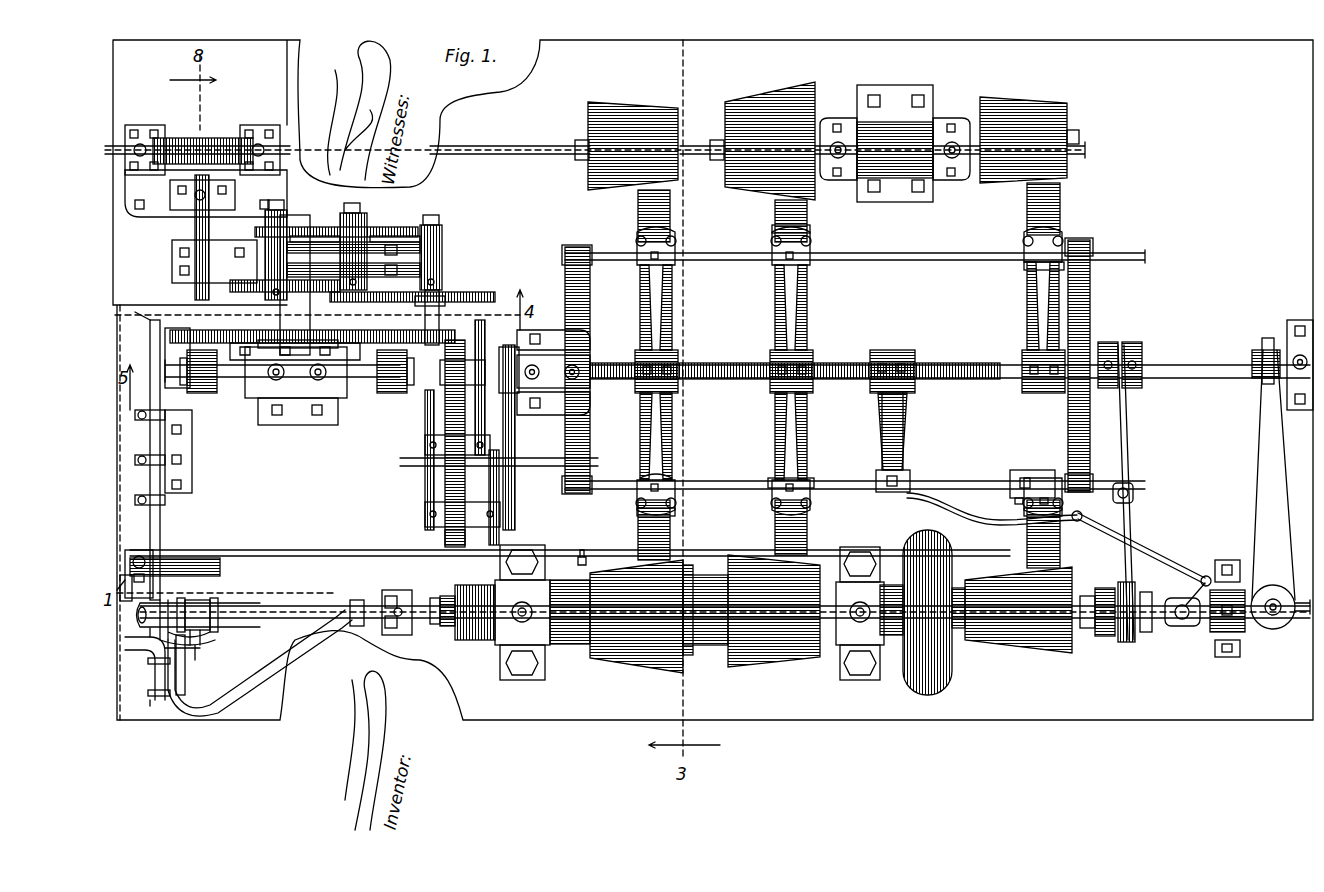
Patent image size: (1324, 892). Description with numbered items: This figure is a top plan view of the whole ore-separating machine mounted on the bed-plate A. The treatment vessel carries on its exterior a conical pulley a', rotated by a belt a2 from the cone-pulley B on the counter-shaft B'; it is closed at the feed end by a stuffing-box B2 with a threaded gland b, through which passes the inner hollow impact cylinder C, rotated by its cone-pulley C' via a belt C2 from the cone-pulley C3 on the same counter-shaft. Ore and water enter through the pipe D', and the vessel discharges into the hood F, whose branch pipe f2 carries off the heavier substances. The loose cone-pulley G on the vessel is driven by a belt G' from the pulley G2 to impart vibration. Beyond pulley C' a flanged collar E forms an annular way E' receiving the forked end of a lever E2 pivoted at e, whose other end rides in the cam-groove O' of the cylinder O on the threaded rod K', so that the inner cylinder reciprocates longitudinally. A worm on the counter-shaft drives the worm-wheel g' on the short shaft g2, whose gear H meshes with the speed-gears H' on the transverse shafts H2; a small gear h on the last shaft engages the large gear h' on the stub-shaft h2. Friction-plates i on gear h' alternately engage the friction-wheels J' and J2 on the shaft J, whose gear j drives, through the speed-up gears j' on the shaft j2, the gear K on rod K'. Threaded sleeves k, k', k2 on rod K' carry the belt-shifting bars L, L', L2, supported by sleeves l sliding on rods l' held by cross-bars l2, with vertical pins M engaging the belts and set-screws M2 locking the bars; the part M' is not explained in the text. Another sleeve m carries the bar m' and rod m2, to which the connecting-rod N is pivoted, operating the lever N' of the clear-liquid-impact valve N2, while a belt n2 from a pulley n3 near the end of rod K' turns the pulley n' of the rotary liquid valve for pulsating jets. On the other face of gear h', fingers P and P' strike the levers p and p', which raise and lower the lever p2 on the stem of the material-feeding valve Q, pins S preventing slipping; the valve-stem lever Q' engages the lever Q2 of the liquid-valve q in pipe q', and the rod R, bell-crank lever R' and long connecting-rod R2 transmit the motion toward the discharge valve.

The bed-plate A is at (713, 380).
The cone-pulley B is at (770, 127).
The counter-shaft B' is at (595, 131).
The stuffing-box B2 is at (475, 642).
The inner impact cylinder C is at (397, 601).
The cone-pulley C' is at (1012, 621).
The belt C2 is at (1062, 218).
The cone-pulley C3 is at (1068, 120).
The feed pipe D' is at (725, 592).
The flanged collar E is at (1097, 635).
The annular way E' is at (1135, 632).
The lever E2 is at (1132, 510).
The hood F is at (915, 548).
The loose cone-pulley G is at (616, 625).
The belt G' is at (722, 251).
The pulley G2 is at (615, 102).
The gear H is at (244, 285).
The speed-gears H' is at (353, 241).
The transverse shafts H2 is at (365, 220).
The shaft J is at (282, 382).
The friction-wheel J' is at (390, 388).
The friction-wheel J2 is at (204, 394).
The gear K is at (499, 430).
The threaded rod K' is at (950, 354).
The belt-shifting bar L is at (1026, 371).
The belt-shifting bar L' is at (776, 371).
The belt-shifting bar L2 is at (640, 305).
The vertical pins M is at (828, 375).
The hub M' is at (827, 356).
The set-screws M2 is at (1028, 265).
The connecting-rod N is at (1141, 548).
The lever N' is at (1216, 600).
The clear-liquid-impact valve N2 is at (1178, 626).
The cam cylinder O is at (1131, 356).
The cam-groove O' is at (1131, 347).
The striking-finger P is at (141, 445).
The striking-finger P' is at (327, 287).
The material-feeding valve Q is at (199, 610).
The lever Q' is at (215, 645).
The lever Q2 is at (185, 668).
The rod R is at (182, 548).
The bell-crank lever R' is at (159, 561).
The connecting-rod R2 is at (318, 550).
The pins S is at (160, 590).
The conical belt surface a' is at (774, 600).
The belt a2 is at (808, 442).
The threaded gland b is at (444, 628).
The pivot e is at (1120, 483).
The branch pipe f2 is at (425, 450).
The worm-wheel g' is at (202, 140).
The short shaft g2 is at (194, 236).
The small gear h is at (437, 317).
The large gear h' is at (312, 332).
The stub-shaft h2 is at (305, 226).
The friction-plates i is at (640, 482).
The gear j is at (485, 386).
The speed-up gears j' is at (415, 460).
The short longitudinal shaft j2 is at (500, 512).
The threaded sleeve k is at (1032, 361).
The threaded sleeve k' is at (805, 357).
The threaded sleeve k2 is at (678, 355).
The sleeves l is at (855, 373).
The rods l' is at (855, 243).
The cross-bars l2 is at (570, 305).
The threaded sleeve m is at (912, 423).
The bar m' is at (905, 452).
The rod m2 is at (1000, 524).
The belt pulley n' is at (1280, 621).
The belt n2 is at (1258, 494).
The pulley n3 is at (1252, 380).
The lever p is at (155, 448).
The compound lever p' is at (155, 358).
The lever p2 is at (200, 592).
The liquid-valve q is at (141, 672).
The pipe q' is at (260, 663).